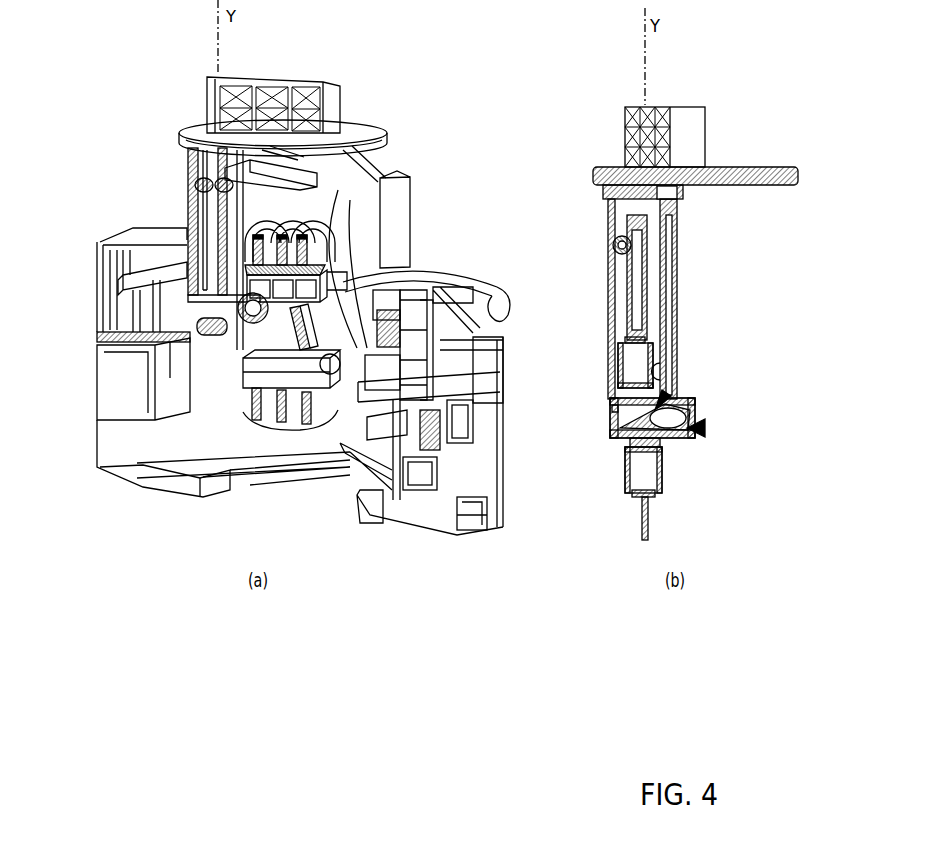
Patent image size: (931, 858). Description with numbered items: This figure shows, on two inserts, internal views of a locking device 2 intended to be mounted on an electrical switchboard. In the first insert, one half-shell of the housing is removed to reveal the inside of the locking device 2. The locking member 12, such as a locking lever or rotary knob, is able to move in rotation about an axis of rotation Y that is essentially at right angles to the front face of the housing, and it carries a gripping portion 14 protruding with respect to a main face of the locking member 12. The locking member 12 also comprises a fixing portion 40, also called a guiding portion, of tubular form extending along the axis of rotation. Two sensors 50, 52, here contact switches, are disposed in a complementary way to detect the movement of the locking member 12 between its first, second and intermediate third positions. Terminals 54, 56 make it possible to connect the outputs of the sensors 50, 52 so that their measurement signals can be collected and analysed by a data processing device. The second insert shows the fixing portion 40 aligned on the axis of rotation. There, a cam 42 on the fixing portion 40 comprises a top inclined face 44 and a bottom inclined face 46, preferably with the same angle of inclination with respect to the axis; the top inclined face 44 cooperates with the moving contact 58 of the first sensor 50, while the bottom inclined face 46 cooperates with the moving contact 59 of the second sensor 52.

The locking device 2 is at (128, 515).
The locking member 12 is at (367, 127).
The gripping portion 14 is at (330, 80).
The fixing portion 40 is at (207, 222).
The cam 42 is at (212, 345).
The top inclined face 44 is at (670, 362).
The bottom inclined face 46 is at (705, 428).
The first sensor 50 is at (380, 258).
The second sensor 52 is at (345, 372).
The terminal 54 is at (443, 380).
The terminal 56 is at (453, 478).
The moving contact of the first sensor 58 is at (612, 402).
The moving contact of the second sensor 59 is at (635, 433).